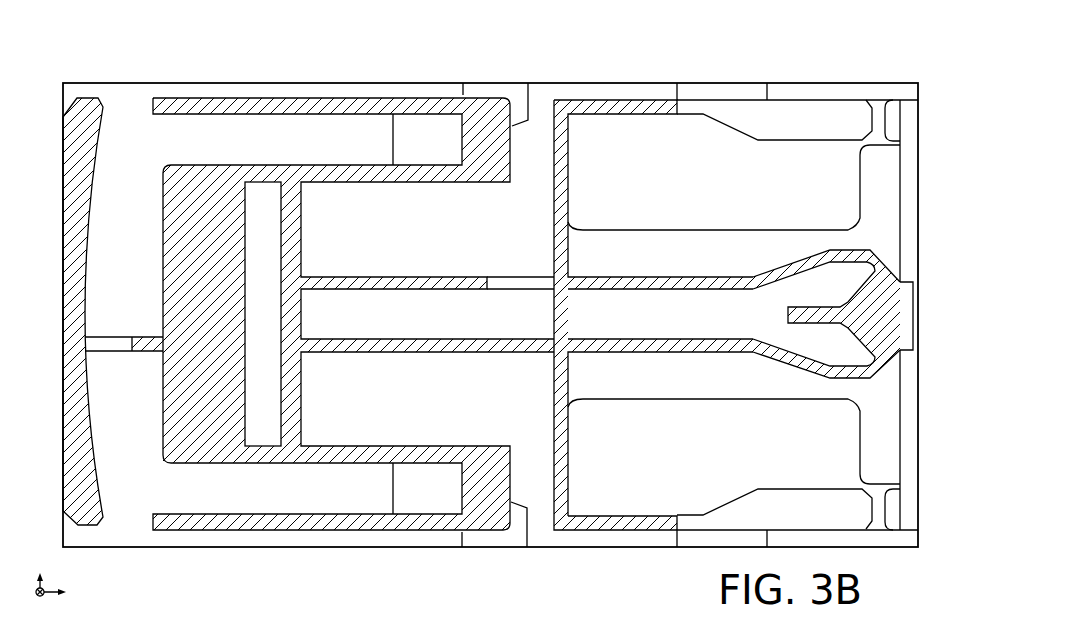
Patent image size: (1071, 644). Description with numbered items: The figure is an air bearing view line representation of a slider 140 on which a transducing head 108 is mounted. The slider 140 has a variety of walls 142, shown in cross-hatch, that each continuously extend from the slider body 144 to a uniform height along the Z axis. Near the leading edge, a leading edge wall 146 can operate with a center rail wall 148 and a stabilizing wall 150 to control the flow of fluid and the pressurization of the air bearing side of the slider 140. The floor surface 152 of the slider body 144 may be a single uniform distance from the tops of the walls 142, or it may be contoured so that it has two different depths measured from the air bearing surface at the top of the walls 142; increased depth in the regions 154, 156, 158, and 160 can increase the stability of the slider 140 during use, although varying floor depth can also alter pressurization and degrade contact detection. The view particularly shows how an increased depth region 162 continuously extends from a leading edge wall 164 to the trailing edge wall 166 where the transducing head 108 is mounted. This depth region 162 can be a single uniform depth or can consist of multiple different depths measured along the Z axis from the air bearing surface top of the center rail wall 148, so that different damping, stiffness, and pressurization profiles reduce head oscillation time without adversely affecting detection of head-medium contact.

The slider 140 is at (95, 60).
The walls 142 is at (497, 187).
The slider body 144 is at (338, 548).
The leading edge wall 146 is at (86, 236).
The center rail wall 148 is at (723, 291).
The stabilizing wall 150 is at (300, 115).
The floor surface 152 is at (124, 155).
The increased depth region 154 is at (519, 77).
The increased depth region 156 is at (412, 150).
The increased depth region 158 is at (793, 130).
The increased depth region 160 is at (853, 183).
The increased depth region 162 is at (654, 263).
The leading edge wall 164 is at (568, 172).
The trailing edge wall 166 is at (898, 390).
The transducing head 108 is at (892, 333).